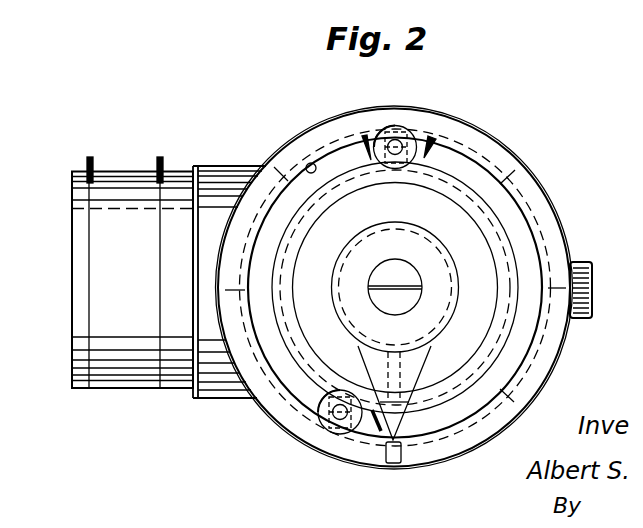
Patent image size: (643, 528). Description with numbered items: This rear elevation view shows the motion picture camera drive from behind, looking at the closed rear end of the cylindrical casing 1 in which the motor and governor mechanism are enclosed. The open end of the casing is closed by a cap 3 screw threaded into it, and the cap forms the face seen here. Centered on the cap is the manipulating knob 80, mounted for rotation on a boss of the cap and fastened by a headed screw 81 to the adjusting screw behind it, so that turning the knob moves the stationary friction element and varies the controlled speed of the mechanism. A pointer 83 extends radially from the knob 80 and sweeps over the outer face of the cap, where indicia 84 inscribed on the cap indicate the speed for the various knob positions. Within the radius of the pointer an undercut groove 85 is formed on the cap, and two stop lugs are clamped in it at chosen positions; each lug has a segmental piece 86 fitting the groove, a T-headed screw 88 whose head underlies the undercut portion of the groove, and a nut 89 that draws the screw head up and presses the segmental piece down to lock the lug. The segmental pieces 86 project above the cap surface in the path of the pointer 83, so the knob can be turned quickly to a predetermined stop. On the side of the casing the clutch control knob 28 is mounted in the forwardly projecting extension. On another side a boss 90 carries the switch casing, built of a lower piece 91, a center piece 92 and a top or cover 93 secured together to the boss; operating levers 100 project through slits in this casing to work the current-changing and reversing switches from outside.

The casing 1 is at (459, 108).
The cap 3 is at (492, 146).
The clutch control knob 28 is at (594, 284).
The manipulating knob 80 is at (430, 238).
The headed screw 81 is at (408, 270).
The pointer 83 is at (402, 457).
The indicia 84 is at (510, 180).
The undercut groove 85 is at (306, 164).
The segmental piece 86 is at (430, 136).
The T-headed screw 88 is at (395, 140).
The nut 89 is at (381, 133).
The boss 90 is at (226, 398).
The lower piece 91 is at (173, 388).
The center piece 92 is at (117, 388).
The top or cover 93 is at (70, 213).
The operating levers 100 is at (103, 141).